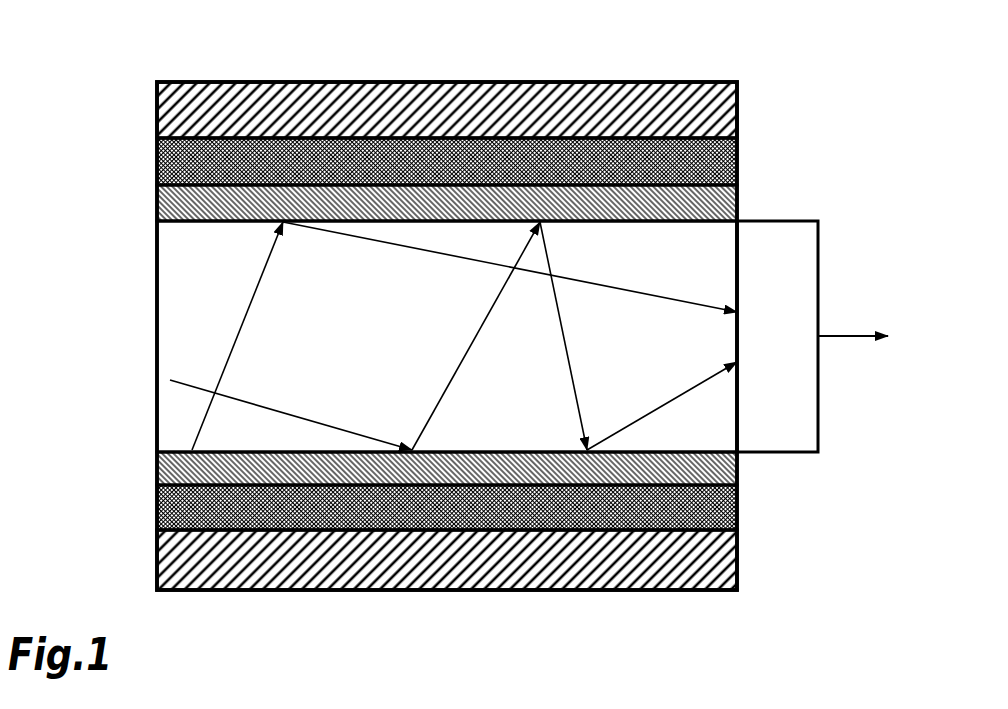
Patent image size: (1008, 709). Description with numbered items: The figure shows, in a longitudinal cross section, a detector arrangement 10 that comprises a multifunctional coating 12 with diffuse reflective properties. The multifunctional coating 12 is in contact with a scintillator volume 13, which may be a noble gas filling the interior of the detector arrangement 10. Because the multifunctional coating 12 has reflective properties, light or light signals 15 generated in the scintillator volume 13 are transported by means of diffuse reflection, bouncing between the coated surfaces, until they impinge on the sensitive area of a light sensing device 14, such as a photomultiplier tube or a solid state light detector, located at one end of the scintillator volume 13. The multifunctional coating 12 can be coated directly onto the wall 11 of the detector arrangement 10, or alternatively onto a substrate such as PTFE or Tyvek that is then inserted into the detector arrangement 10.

The detector arrangement 10 is at (797, 557).
The wall 11 is at (230, 110).
The multifunctional coating 12 is at (142, 140).
The scintillator volume 13 is at (375, 353).
The light sensing device 14 is at (807, 267).
The light signals 15 is at (265, 277).